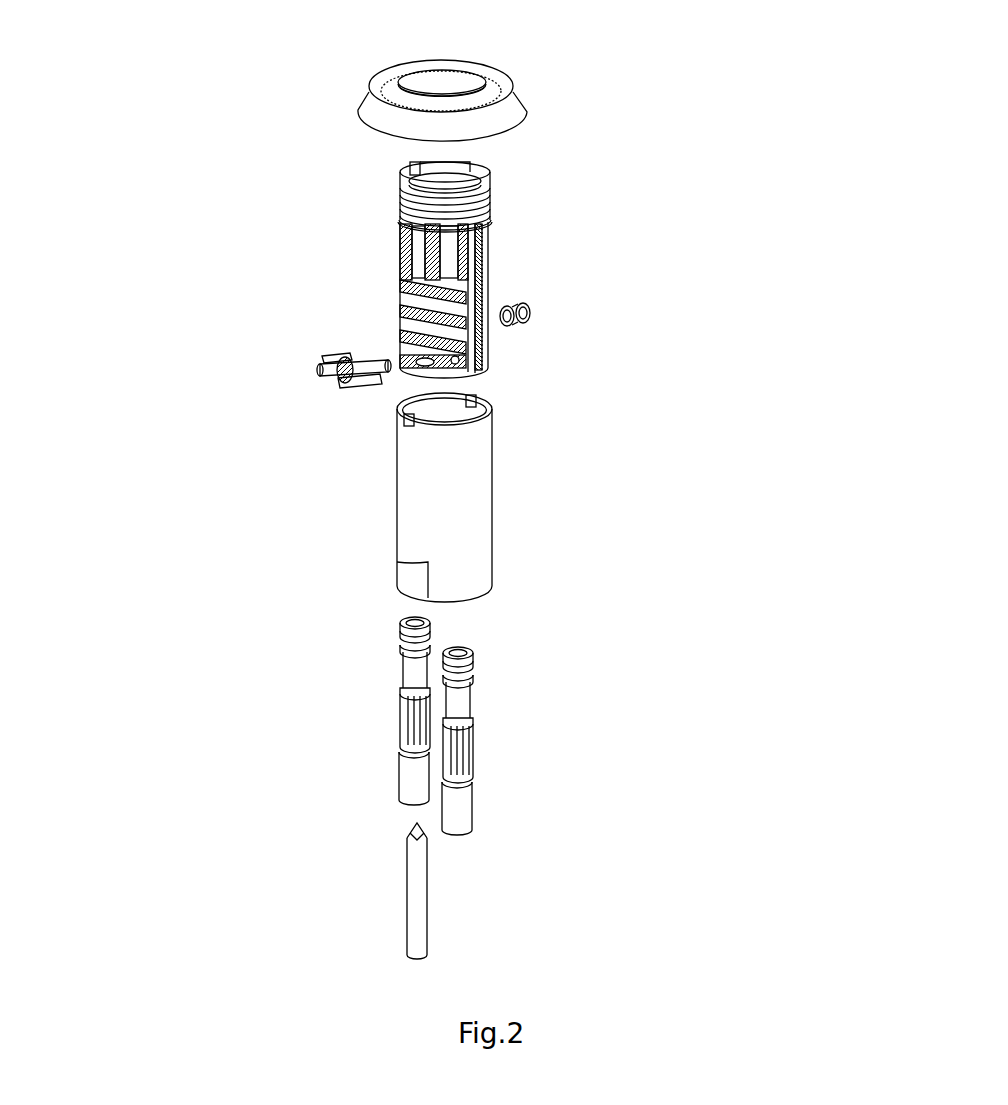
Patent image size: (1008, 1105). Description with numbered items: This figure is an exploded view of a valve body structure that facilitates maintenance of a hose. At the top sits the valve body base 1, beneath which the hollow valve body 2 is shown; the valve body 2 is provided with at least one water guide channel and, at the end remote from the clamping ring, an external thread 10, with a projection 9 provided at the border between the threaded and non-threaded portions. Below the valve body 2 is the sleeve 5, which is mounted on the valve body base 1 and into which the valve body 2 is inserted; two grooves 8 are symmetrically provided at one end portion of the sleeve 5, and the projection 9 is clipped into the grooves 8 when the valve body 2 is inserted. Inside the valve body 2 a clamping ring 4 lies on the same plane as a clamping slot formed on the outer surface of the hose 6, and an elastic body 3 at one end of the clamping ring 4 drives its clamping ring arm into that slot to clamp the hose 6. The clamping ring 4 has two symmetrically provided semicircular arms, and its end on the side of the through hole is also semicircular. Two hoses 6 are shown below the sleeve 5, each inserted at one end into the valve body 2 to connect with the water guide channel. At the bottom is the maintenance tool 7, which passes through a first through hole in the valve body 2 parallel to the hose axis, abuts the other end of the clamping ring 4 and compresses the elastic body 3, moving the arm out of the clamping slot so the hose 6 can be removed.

The valve body base 1 is at (512, 78).
The valve body 2 is at (362, 275).
The elastic body 3 is at (583, 276).
The clamping ring 4 is at (313, 413).
The sleeve 5 is at (532, 505).
The hose 6 is at (354, 726).
The maintenance tool 7 is at (537, 887).
The grooves 8 is at (492, 401).
The projection 9 is at (400, 215).
The thread 10 is at (487, 195).